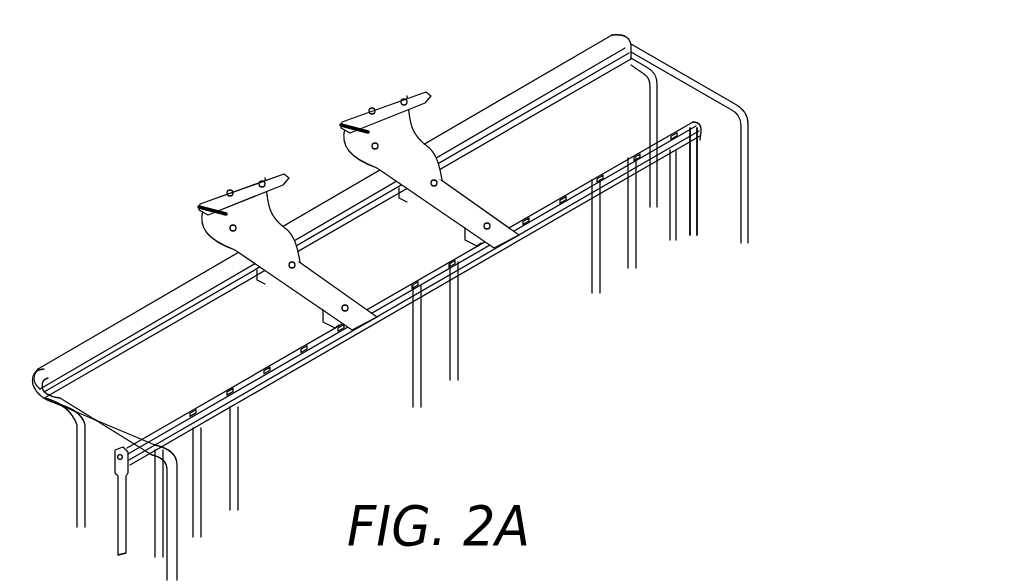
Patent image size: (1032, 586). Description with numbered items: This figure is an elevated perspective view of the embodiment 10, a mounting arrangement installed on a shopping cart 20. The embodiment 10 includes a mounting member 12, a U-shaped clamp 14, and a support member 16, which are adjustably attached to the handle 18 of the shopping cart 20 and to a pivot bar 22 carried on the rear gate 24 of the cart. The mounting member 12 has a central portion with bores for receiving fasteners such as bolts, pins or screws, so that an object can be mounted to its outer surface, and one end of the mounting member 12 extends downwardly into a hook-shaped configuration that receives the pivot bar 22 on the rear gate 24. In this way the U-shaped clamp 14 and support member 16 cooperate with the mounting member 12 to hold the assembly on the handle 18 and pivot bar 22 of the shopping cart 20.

The embodiment of the invention 10 is at (315, 170).
The mounting member 12 is at (355, 112).
The U-shaped clamp 14 is at (258, 280).
The support member 16 is at (255, 223).
The handle 18 is at (505, 115).
The shopping cart 20 is at (700, 73).
The pivot bar 22 is at (387, 303).
The rear gate 24 is at (698, 164).